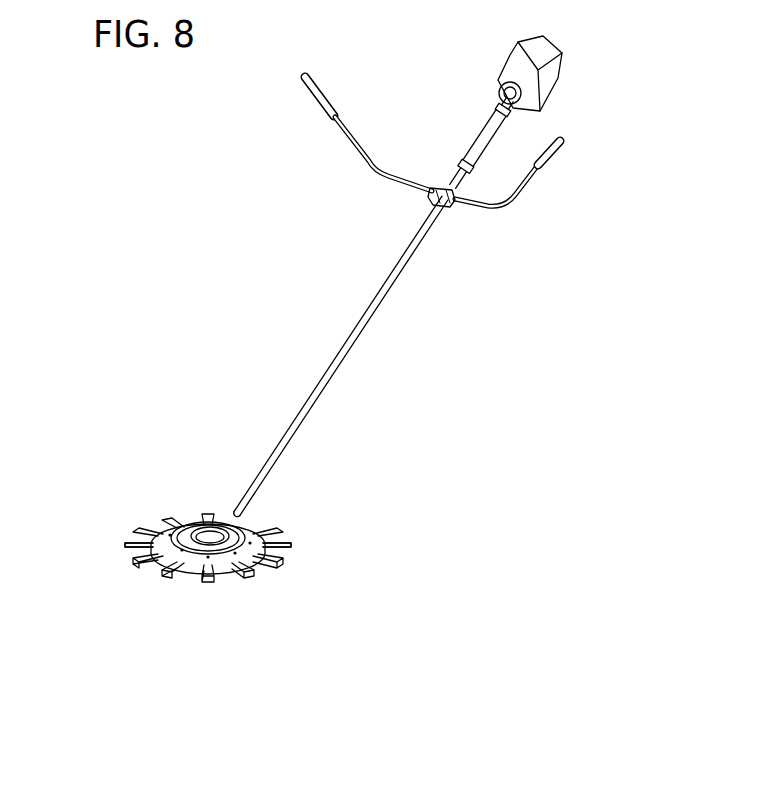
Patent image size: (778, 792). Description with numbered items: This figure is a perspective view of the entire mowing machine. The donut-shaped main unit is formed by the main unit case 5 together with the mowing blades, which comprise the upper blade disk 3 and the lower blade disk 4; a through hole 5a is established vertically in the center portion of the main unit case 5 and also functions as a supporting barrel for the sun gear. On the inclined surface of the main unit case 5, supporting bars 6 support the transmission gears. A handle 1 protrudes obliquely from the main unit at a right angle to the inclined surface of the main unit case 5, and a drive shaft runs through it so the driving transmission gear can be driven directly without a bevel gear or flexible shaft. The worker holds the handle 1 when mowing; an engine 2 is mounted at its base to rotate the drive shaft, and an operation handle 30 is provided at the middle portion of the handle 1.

The handle 1 is at (332, 378).
The engine 2 is at (548, 77).
The operation handle 30 is at (508, 208).
The upper blade disk 3 is at (140, 562).
The lower blade disk 4 is at (157, 580).
The main unit case 5 is at (205, 523).
The through hole 5a is at (215, 537).
The supporting bars 6 is at (165, 527).